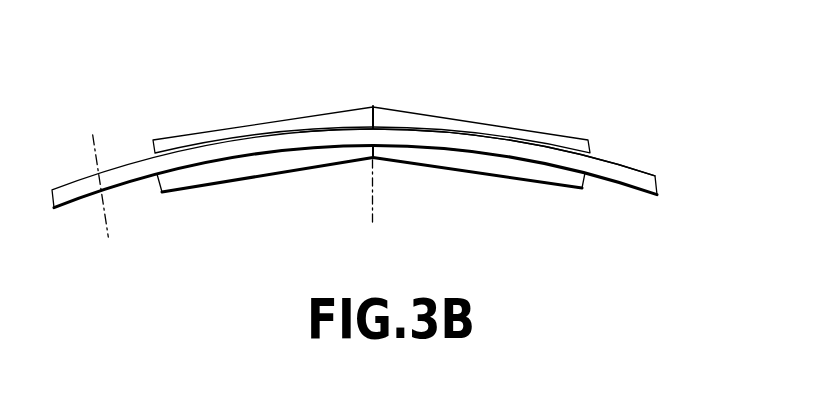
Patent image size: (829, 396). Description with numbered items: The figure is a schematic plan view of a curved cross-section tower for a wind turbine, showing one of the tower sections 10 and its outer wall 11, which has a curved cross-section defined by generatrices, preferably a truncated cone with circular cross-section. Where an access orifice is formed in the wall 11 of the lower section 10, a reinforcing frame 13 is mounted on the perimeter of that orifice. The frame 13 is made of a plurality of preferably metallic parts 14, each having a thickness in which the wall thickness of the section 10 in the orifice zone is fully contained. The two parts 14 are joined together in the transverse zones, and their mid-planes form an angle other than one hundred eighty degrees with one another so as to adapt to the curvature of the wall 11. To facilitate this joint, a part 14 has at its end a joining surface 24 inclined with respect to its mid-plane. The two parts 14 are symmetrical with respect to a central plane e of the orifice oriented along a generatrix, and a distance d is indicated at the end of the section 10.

The section 10 is at (643, 162).
The outer wall 11 is at (607, 160).
The reinforcing frame 13 is at (373, 105).
The part 14 is at (262, 122).
The joining surface 24 is at (377, 117).
The distance d is at (106, 223).
The central plane e is at (374, 197).